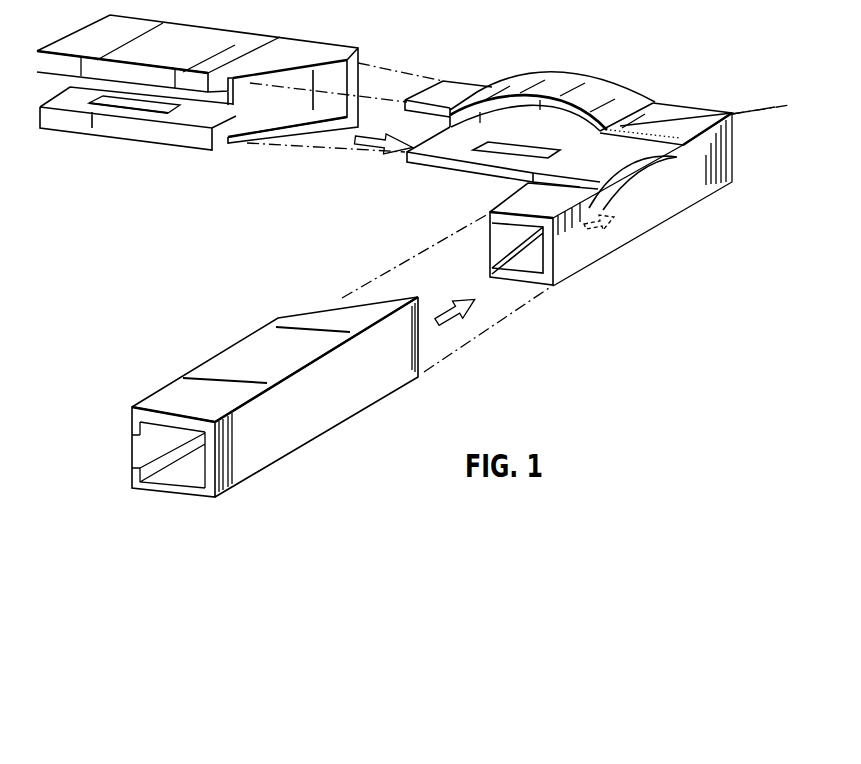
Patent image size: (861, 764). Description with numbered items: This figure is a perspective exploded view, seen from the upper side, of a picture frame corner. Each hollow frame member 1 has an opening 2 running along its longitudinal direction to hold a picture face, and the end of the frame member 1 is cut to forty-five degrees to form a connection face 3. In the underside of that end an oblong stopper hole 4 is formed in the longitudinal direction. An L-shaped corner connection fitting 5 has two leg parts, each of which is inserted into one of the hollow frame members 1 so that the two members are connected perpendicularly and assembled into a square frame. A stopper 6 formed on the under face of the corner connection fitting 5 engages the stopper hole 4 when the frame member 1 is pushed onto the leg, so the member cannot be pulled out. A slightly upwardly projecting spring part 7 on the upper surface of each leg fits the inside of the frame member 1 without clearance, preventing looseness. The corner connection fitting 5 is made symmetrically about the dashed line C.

The hollow frame member 1 is at (184, 36).
The opening 2 is at (205, 115).
The connection face 3 is at (323, 63).
The stopper hole 4 is at (96, 113).
The corner connection fitting 5 is at (463, 85).
The stopper 6 is at (503, 151).
The spring part 7 is at (598, 86).
The dashed line C is at (732, 114).